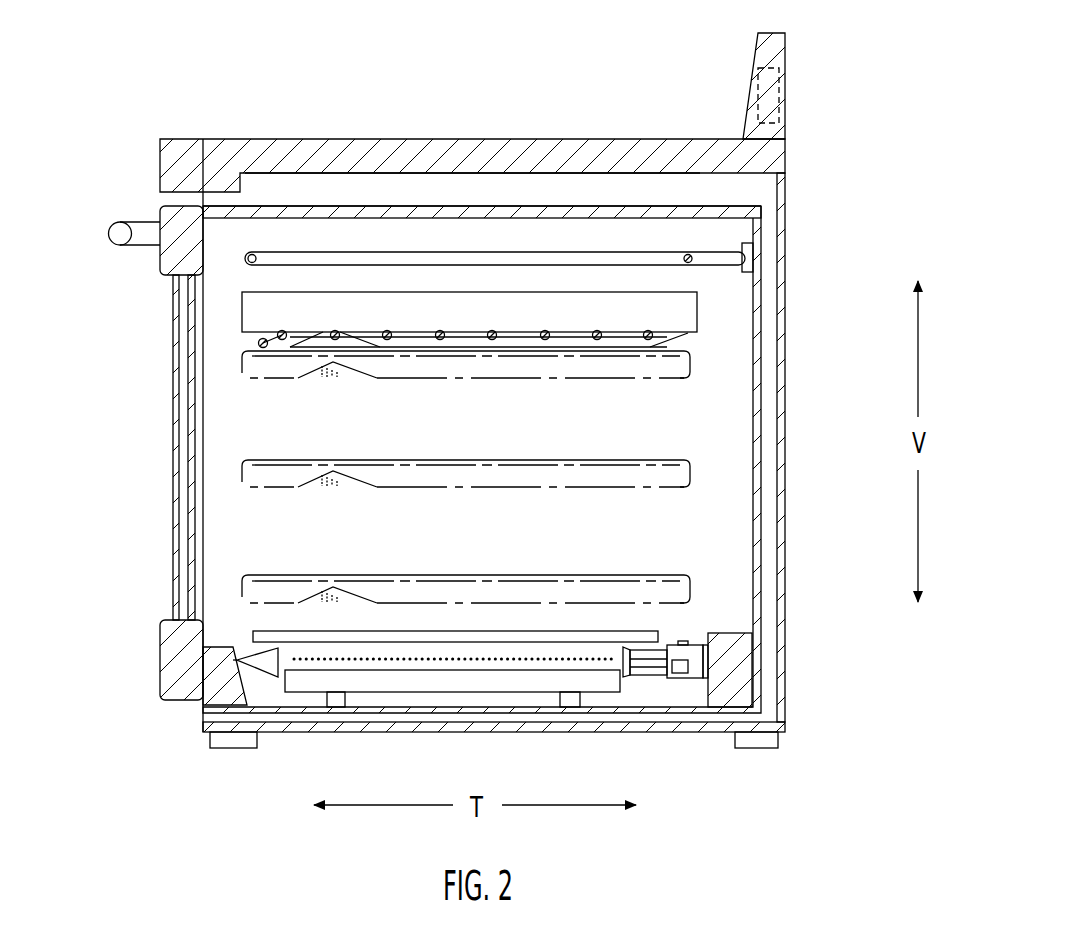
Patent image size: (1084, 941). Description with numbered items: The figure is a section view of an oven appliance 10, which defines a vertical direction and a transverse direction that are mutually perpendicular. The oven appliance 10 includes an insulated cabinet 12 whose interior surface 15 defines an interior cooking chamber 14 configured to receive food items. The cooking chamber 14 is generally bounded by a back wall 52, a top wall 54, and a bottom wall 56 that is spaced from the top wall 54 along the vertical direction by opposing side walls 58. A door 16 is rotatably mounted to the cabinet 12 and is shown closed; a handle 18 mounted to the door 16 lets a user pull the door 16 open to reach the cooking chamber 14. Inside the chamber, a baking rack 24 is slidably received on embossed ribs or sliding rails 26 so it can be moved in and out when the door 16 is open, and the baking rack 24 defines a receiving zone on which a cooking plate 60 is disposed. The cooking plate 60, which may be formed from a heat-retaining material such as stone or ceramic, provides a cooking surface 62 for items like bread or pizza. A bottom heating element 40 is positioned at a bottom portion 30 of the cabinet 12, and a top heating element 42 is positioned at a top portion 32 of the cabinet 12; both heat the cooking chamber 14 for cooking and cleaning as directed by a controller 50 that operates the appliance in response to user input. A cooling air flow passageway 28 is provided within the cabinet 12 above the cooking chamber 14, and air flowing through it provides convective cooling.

The oven appliance 10 is at (842, 187).
The insulated cabinet 12 is at (258, 138).
The cooking chamber 14 is at (688, 397).
The interior surface 15 is at (483, 222).
The door 16 is at (162, 260).
The handle 18 is at (118, 230).
The baking rack 24 is at (402, 340).
The sliding rails 26 is at (688, 590).
The cooling air flow passageway 28 is at (347, 190).
The bottom portion 30 is at (165, 727).
The top portion 32 is at (135, 140).
The bottom heating element 40 is at (652, 690).
The top heating element 42 is at (700, 275).
The controller 50 is at (786, 88).
The back wall 52 is at (755, 290).
The top wall 54 is at (567, 205).
The bottom wall 56 is at (593, 712).
The side walls 58 is at (265, 545).
The cooking plate 60 is at (566, 333).
The cooking surface 62 is at (639, 292).